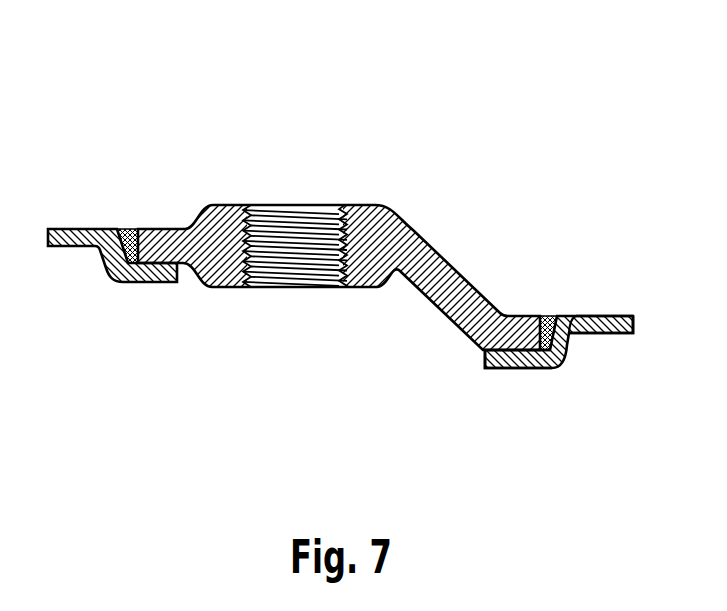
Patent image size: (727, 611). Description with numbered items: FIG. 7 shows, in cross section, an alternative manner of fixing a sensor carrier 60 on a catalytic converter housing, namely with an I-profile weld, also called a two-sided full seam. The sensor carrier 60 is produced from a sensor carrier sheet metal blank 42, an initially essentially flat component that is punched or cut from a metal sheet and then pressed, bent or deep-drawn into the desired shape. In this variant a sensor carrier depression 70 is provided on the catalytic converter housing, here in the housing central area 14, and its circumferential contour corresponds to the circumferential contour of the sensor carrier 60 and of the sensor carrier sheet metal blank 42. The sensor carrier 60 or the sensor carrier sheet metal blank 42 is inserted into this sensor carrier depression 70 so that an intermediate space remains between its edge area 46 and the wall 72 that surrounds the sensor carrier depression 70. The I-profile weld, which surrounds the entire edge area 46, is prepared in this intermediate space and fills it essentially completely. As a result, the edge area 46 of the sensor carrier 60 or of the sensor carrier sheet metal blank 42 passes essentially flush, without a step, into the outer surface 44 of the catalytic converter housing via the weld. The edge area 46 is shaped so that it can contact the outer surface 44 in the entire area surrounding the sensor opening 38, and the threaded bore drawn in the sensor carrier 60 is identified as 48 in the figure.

The sensor carrier 60 is at (358, 251).
The sensor carrier depression 70 is at (145, 222).
The thread 48 is at (290, 227).
The sensor carrier sheet metal blank 42 is at (424, 245).
The edge area 46 is at (536, 322).
The outer surface 44 is at (594, 318).
The housing central area 14 is at (615, 336).
The wall 72 is at (566, 360).
The sensor opening 38 is at (178, 268).